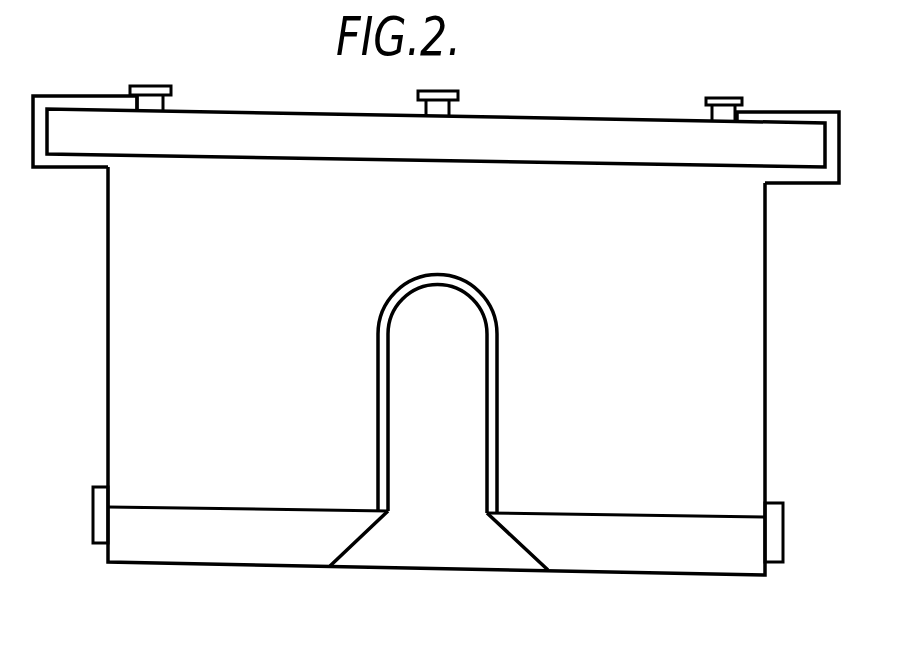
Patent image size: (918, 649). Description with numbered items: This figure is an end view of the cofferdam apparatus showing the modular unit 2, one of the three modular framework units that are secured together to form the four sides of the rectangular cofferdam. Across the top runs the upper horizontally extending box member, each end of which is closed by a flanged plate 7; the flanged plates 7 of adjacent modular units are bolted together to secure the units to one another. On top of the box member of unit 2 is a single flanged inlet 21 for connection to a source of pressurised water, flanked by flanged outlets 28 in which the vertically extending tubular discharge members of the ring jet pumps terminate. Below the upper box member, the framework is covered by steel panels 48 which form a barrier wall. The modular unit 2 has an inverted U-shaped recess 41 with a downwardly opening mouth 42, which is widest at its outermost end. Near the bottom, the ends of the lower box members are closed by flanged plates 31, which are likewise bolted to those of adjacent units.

The modular unit 2 is at (243, 123).
The flanged plate 7 is at (40, 97).
The flanged inlet 21 is at (443, 92).
The flanged outlet 28 is at (147, 86).
The flanged plate 31 is at (100, 508).
The inverted U-shaped recess 41 is at (430, 493).
The downwardly opening mouth 42 is at (462, 540).
The steel panel 48 is at (712, 325).